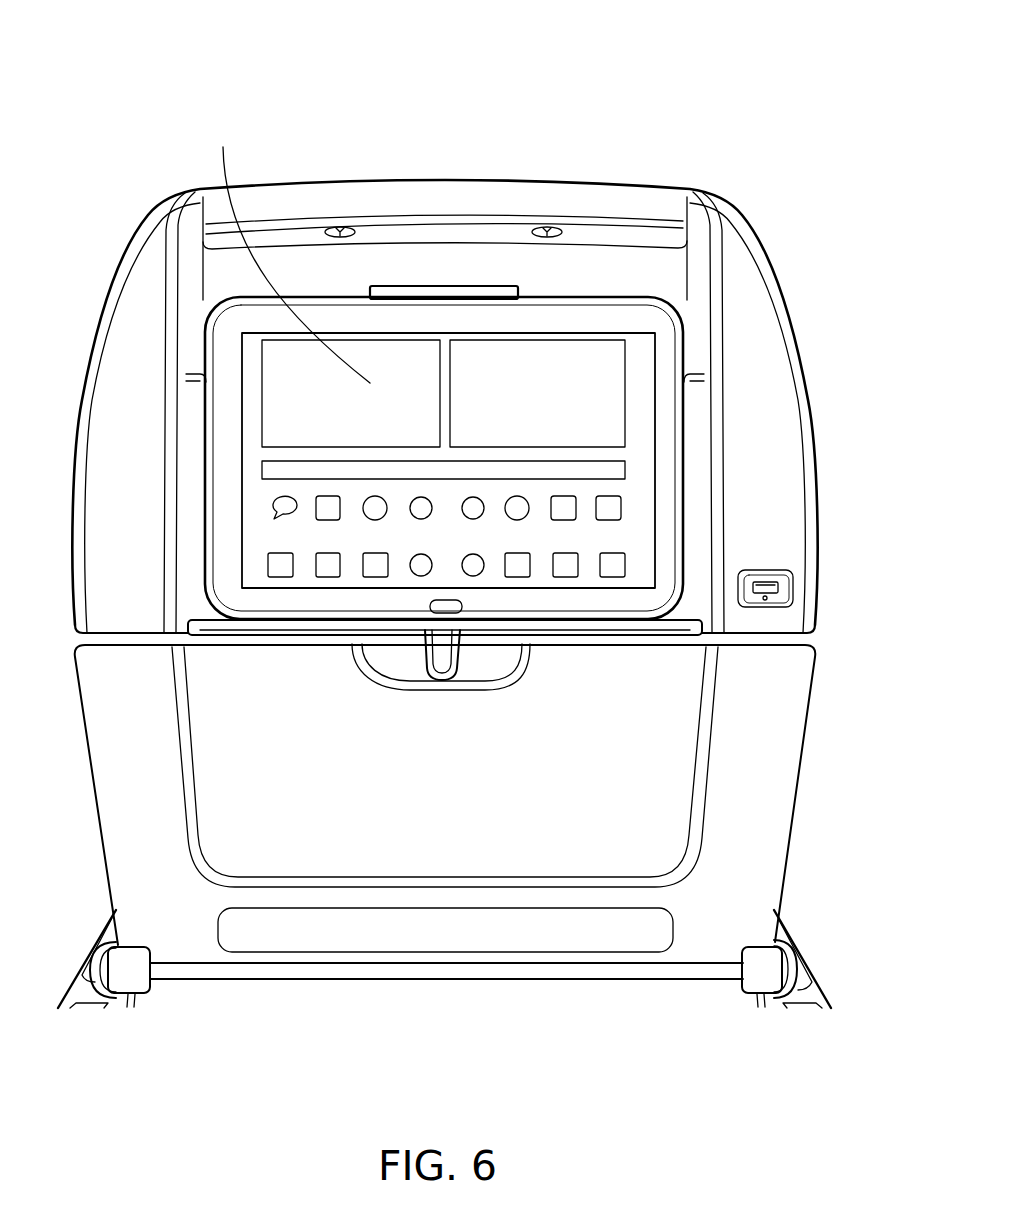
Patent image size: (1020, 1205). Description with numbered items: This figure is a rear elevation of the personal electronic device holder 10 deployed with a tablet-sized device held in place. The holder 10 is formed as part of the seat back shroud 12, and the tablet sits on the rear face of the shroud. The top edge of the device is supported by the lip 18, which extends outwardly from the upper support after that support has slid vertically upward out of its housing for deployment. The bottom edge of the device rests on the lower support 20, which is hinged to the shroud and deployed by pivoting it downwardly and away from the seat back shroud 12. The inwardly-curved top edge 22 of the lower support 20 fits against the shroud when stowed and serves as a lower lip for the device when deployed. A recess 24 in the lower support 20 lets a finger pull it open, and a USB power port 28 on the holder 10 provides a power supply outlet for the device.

The personal electronic device holder 10 is at (788, 150).
The seat back shroud 12 is at (602, 268).
The lip 18 is at (447, 292).
The lower support 20 is at (613, 635).
The inwardly-curved top edge 22 is at (268, 615).
The recess 24 is at (382, 630).
The USB power port 28 is at (788, 596).